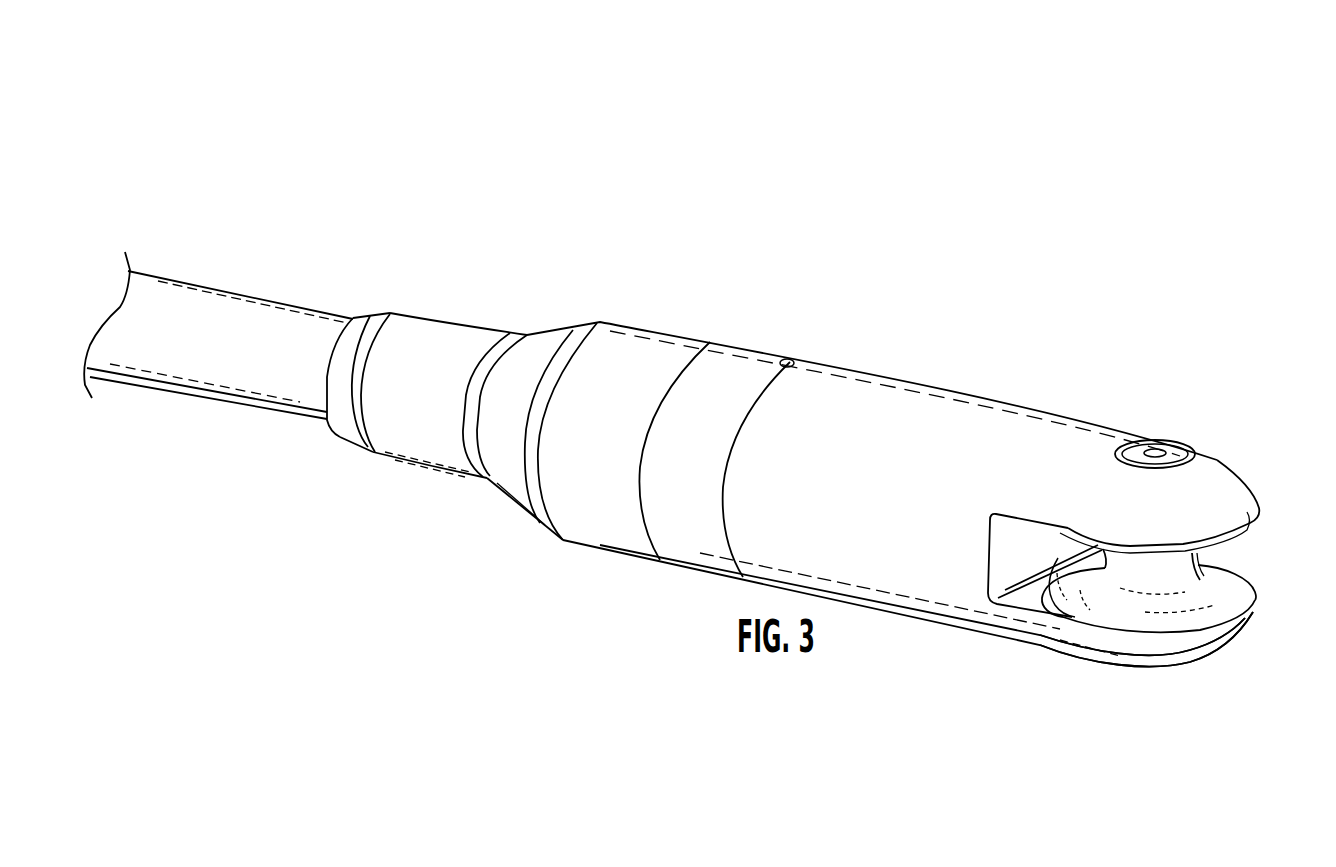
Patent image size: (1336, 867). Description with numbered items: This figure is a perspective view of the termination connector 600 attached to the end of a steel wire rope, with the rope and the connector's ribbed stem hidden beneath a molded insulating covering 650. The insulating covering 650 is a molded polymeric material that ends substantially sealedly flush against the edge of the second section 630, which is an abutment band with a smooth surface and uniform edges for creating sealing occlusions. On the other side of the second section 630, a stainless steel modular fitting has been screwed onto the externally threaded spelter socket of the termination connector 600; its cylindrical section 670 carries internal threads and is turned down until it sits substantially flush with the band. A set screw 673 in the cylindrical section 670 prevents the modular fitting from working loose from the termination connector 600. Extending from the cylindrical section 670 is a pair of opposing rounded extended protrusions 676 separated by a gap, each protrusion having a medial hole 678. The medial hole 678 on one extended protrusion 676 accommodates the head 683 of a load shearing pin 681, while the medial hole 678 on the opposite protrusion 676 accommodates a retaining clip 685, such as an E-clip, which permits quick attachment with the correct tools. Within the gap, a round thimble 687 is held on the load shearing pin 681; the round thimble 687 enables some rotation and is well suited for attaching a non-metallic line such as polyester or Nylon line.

The termination connector 600 is at (575, 117).
The insulating covering 650 is at (208, 255).
The second section 630 is at (768, 323).
The set screw 673 is at (792, 361).
The cylindrical section 670 is at (932, 353).
The rounded extended protrusion 676 is at (1207, 497).
The medial hole 678 is at (1121, 440).
The load shearing pin 681 is at (1154, 449).
The head 683 is at (1182, 444).
The retaining clip 685 is at (1143, 670).
The round thimble 687 is at (1198, 580).